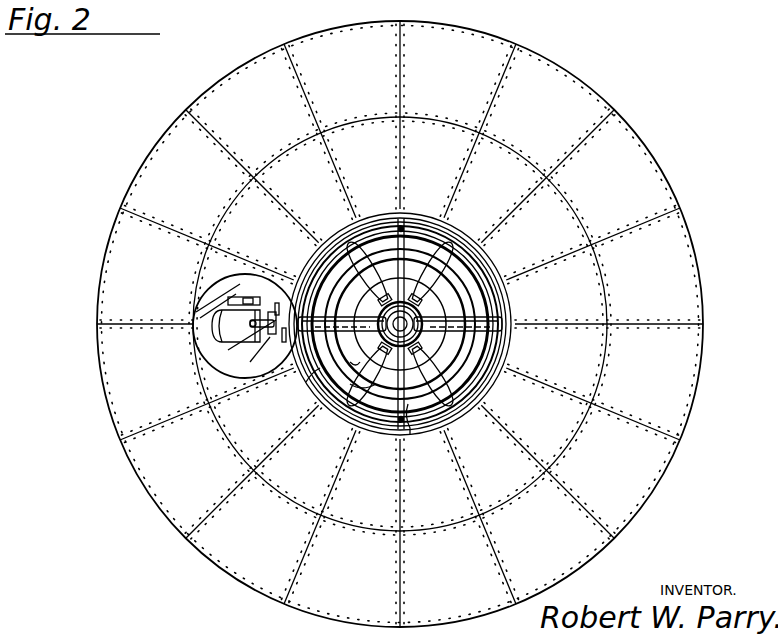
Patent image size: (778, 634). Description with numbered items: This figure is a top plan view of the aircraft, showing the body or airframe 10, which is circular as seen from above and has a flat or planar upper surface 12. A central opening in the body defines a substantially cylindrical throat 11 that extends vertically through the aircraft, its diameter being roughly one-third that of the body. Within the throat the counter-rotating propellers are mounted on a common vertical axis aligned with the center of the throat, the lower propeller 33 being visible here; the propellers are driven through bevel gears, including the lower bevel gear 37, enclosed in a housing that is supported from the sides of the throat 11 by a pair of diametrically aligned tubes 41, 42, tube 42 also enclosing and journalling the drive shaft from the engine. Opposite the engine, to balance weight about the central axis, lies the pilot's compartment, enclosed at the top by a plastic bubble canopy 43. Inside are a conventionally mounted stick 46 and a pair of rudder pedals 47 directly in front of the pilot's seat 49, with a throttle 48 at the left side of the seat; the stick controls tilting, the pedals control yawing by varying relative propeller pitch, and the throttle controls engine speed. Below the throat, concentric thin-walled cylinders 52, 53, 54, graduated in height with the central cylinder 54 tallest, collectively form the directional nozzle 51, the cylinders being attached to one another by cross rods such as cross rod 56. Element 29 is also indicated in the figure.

The body or airframe 10 is at (578, 100).
The throat 11 is at (496, 366).
The upper surface 12 is at (680, 262).
The conduit 29 is at (250, 362).
The lower propeller 33 is at (452, 250).
The lower bevel gear 37 is at (378, 372).
The tube 41 is at (326, 318).
The tube 42 is at (486, 318).
The bubble canopy 43 is at (215, 357).
The stick 46 is at (253, 328).
The rudder pedals 47 is at (276, 310).
The throttle 48 is at (252, 295).
The pilot's seat 49 is at (210, 332).
The directional nozzle 51 is at (312, 380).
The cylinder 52 is at (480, 372).
The cylinder 53 is at (362, 382).
The central cylinder 54 is at (356, 361).
The cross rod 56 is at (412, 408).